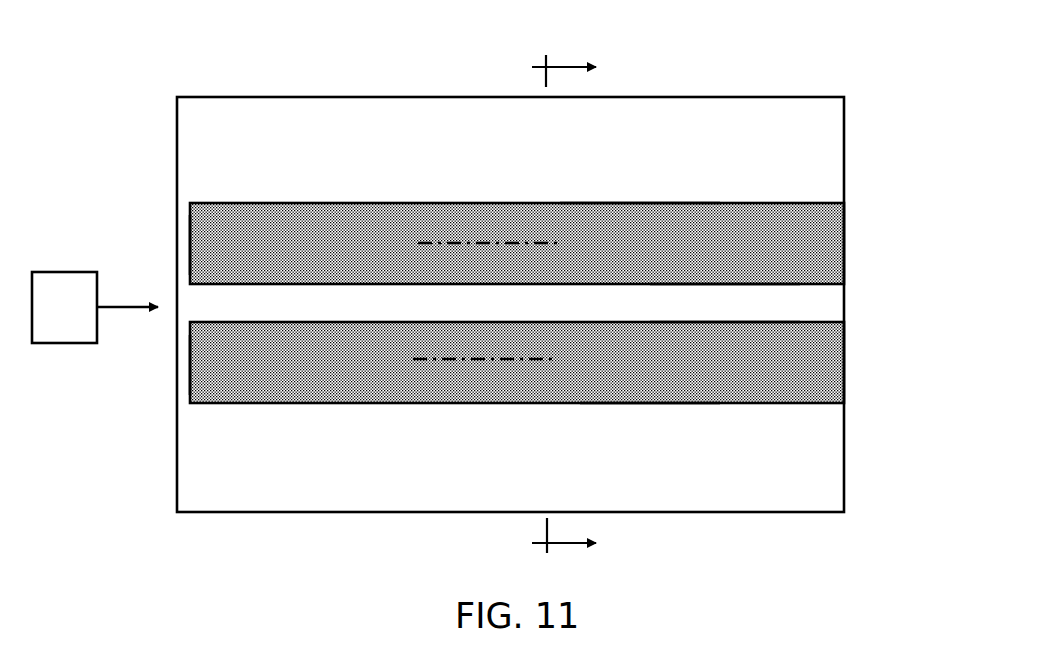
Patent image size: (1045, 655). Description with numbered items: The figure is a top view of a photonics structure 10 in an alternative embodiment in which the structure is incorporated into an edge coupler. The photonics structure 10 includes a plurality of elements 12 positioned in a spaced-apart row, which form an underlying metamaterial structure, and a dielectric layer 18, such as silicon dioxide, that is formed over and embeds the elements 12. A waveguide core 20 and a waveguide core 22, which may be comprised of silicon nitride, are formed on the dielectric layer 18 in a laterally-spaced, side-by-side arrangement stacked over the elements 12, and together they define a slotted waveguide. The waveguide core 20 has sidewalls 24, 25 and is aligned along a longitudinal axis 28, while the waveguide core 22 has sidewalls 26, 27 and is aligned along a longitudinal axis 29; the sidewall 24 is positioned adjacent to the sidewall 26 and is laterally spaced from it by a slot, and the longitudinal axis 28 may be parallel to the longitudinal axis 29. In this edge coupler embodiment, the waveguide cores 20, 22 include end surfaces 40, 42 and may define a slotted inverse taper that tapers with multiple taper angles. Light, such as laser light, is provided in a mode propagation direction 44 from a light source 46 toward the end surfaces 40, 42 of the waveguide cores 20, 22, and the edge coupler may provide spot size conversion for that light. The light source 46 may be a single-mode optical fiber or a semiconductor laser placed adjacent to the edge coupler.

The photonics structure 10 is at (148, 64).
The elements 12 is at (588, 309).
The dielectric layer 18 is at (792, 468).
The waveguide core 20 is at (792, 248).
The waveguide core 22 is at (792, 358).
The sidewall 24 is at (731, 283).
The sidewall 25 is at (637, 203).
The sidewall 26 is at (724, 322).
The sidewall 27 is at (653, 403).
The longitudinal axis 28 is at (520, 359).
The longitudinal axis 29 is at (483, 243).
The end surface 40 is at (190, 248).
The end surface 42 is at (190, 368).
The mode propagation direction 44 is at (135, 307).
The light source 46 is at (64, 307).